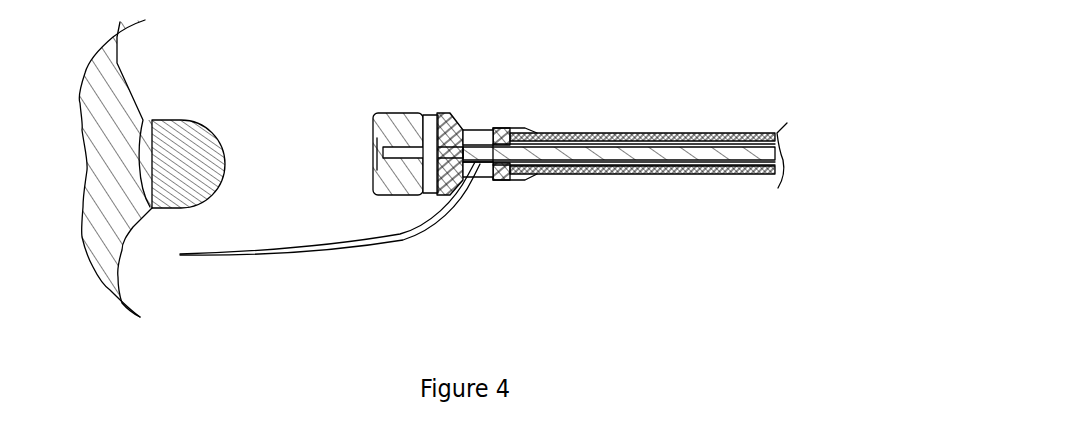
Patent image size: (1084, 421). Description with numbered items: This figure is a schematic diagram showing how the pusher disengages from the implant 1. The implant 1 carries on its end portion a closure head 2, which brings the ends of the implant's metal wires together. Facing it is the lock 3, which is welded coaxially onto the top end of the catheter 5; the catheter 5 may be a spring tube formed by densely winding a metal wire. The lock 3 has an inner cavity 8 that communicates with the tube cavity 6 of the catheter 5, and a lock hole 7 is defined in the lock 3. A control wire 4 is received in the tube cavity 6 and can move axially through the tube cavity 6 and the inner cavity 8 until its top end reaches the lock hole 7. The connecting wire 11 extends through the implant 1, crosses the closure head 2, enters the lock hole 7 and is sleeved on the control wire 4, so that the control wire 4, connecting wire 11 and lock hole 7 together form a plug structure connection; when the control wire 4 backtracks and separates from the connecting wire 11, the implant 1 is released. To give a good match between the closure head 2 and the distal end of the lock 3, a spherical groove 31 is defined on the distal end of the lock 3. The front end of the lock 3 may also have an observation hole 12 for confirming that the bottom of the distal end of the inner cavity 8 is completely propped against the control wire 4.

The implant 1 is at (118, 127).
The closure head 2 is at (157, 118).
The lock 3 is at (387, 113).
The spherical groove 31 is at (373, 150).
The inner cavity 8 is at (399, 146).
The observation hole 12 is at (437, 113).
The control wire 4 is at (481, 148).
The catheter 5 is at (553, 132).
The tube cavity 6 is at (596, 136).
The lock hole 7 is at (485, 178).
The connecting wire 11 is at (405, 237).